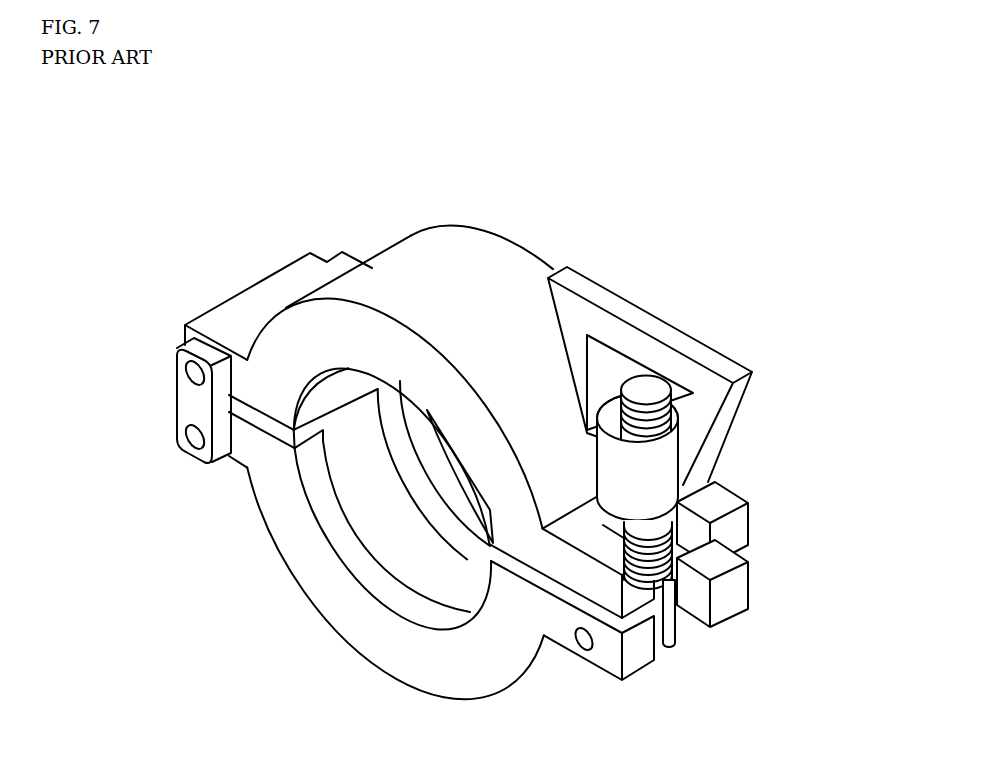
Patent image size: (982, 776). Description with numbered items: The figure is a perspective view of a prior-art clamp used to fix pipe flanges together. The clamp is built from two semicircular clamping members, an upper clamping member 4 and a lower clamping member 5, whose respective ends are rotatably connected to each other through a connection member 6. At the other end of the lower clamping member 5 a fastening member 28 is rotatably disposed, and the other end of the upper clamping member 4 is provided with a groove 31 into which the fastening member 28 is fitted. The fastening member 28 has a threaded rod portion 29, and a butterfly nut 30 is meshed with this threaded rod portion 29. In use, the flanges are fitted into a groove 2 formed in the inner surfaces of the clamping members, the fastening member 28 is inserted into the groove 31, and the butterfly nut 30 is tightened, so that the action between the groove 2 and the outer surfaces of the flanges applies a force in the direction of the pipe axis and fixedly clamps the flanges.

The groove 2 is at (407, 558).
The upper clamping member 4 is at (433, 252).
The lower clamping member 5 is at (278, 520).
The connection member 6 is at (203, 405).
The fastening member 28 is at (663, 610).
The rod portion 29 is at (680, 557).
The butterfly nut 30 is at (650, 460).
The groove 31 is at (705, 545).